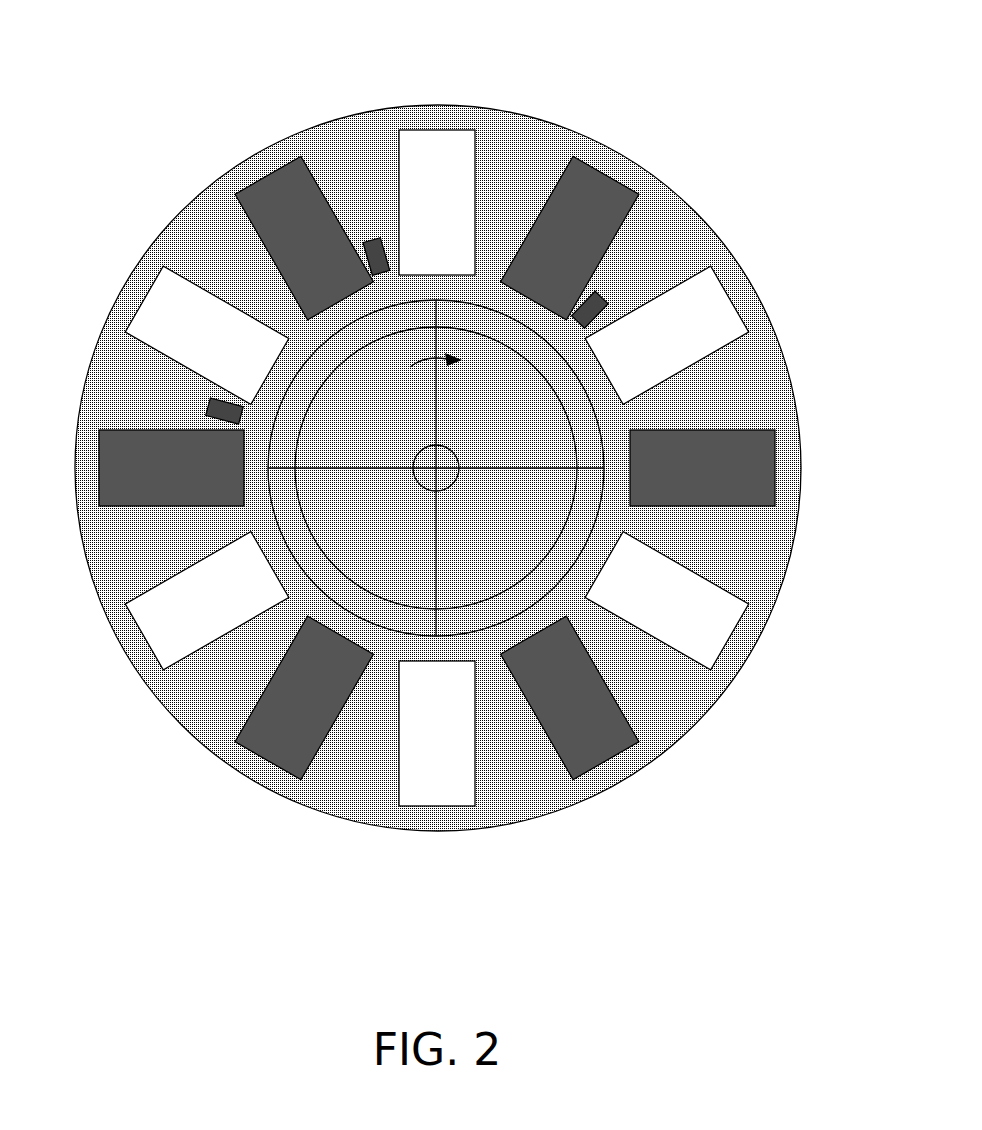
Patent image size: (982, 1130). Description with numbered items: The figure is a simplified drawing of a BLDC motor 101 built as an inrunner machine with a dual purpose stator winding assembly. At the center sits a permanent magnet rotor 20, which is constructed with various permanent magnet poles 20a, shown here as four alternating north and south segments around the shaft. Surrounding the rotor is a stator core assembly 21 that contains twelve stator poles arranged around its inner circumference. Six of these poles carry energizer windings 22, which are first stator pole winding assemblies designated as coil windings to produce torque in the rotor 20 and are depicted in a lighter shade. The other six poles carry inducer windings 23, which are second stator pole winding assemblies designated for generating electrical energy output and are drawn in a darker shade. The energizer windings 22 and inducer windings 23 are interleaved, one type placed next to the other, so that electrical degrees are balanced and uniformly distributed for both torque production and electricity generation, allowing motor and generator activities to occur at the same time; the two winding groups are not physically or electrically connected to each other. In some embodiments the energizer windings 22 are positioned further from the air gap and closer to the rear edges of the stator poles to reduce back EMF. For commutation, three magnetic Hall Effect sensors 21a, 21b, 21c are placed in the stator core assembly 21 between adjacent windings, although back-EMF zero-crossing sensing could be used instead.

The BLDC motor 101 is at (376, 74).
The permanent magnet rotor 20 is at (480, 330).
The poles 20a is at (317, 367).
The stator core assembly 21 is at (657, 240).
The magnetic Hall Effect sensor 21a is at (118, 366).
The magnetic Hall Effect sensor 21b is at (372, 240).
The magnetic Hall Effect sensor 21c is at (608, 290).
The energizer windings 22 is at (436, 165).
The inducer windings 23 is at (265, 200).